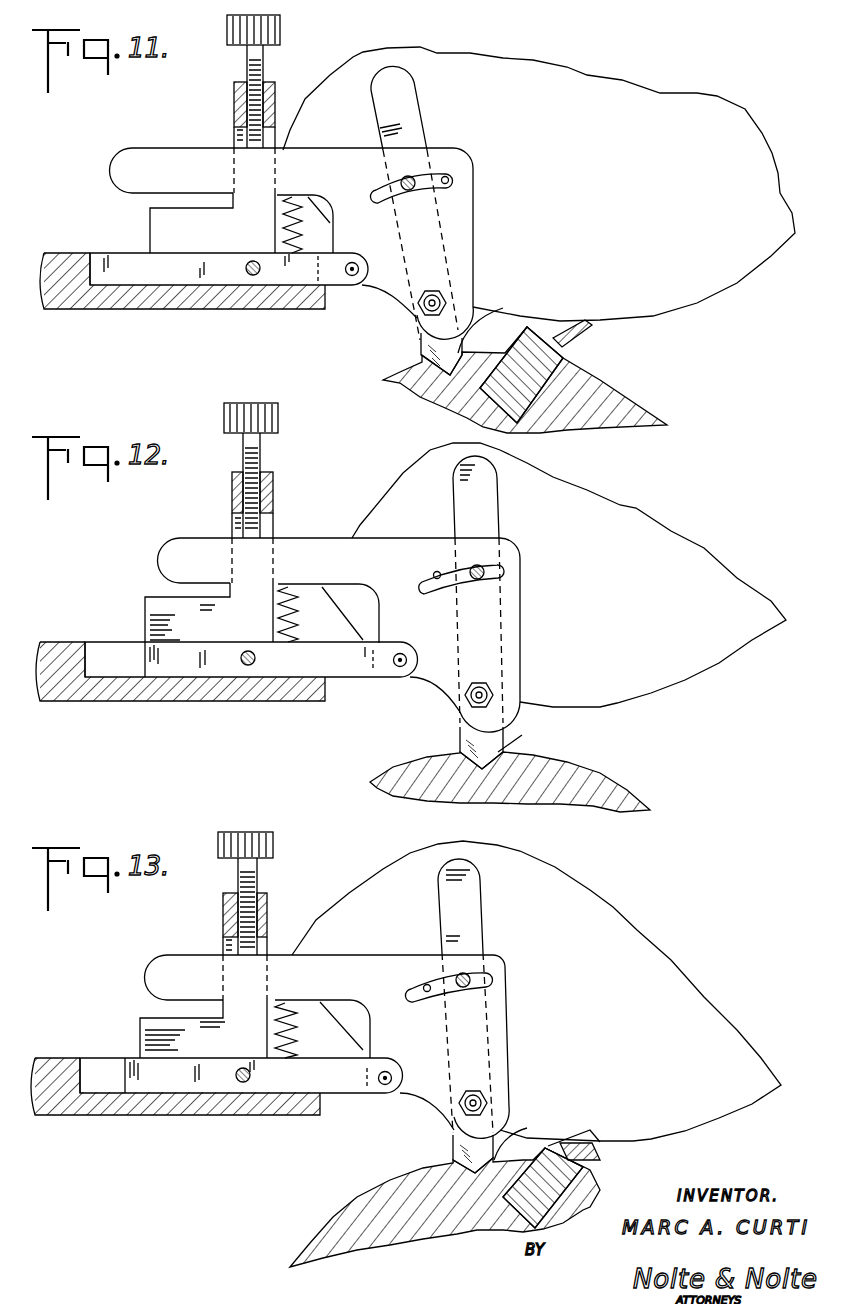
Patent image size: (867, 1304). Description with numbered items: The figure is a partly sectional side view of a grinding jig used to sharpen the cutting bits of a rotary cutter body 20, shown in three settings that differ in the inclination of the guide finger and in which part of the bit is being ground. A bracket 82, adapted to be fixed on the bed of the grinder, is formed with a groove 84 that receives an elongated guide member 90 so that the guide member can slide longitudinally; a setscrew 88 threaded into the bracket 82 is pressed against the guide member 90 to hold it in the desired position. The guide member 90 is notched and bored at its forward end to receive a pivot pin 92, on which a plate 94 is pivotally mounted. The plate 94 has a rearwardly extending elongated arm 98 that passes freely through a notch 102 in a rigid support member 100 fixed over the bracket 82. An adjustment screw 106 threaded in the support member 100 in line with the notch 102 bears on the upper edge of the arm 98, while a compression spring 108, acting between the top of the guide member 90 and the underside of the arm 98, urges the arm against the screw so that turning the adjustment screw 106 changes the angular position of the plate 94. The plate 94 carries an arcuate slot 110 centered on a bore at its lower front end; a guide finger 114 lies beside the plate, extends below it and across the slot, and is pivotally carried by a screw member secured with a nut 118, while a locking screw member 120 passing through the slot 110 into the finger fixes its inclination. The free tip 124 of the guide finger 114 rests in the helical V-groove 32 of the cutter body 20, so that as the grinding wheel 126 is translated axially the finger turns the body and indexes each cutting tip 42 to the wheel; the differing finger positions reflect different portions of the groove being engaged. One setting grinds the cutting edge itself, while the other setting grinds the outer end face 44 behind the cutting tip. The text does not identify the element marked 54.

In FIG. 11, the cutter body 20 is at (645, 414).
In FIG. 12, the cutter body 20 is at (640, 804).
In FIG. 13, the cutter body 20 is at (300, 1258).
In FIG. 11, the V-groove 32 is at (440, 372).
In FIG. 12, the V-groove 32 is at (468, 764).
In FIG. 13, the V-groove 32 is at (458, 1167).
In FIG. 11, the cutting tip 42 is at (582, 334).
In FIG. 13, the cutting tip 42 is at (606, 1154).
In FIG. 13, the outer end face 44 is at (580, 1138).
In FIG. 11, the insert block 54 is at (576, 353).
In FIG. 13, the insert block 54 is at (600, 1176).
In FIG. 11, the bracket 82 is at (60, 252).
In FIG. 12, the bracket 82 is at (58, 652).
In FIG. 13, the bracket 82 is at (55, 1068).
In FIG. 11, the groove 84 is at (112, 281).
In FIG. 12, the groove 84 is at (110, 673).
In FIG. 13, the groove 84 is at (98, 1090).
In FIG. 11, the setscrew 88 is at (253, 276).
In FIG. 12, the setscrew 88 is at (250, 666).
In FIG. 13, the setscrew 88 is at (244, 1083).
In FIG. 11, the guide member 90 is at (183, 275).
In FIG. 12, the guide member 90 is at (193, 666).
In FIG. 13, the guide member 90 is at (179, 1086).
In FIG. 11, the pivot pin 92 is at (352, 277).
In FIG. 12, the pivot pin 92 is at (402, 668).
In FIG. 13, the pivot pin 92 is at (386, 1086).
In FIG. 11, the plate 94 is at (373, 240).
In FIG. 12, the plate 94 is at (435, 620).
In FIG. 13, the plate 94 is at (421, 1038).
In FIG. 11, the elongated arm 98 is at (168, 160).
In FIG. 12, the elongated arm 98 is at (200, 552).
In FIG. 13, the elongated arm 98 is at (190, 972).
In FIG. 11, the support member 100 is at (234, 104).
In FIG. 12, the support member 100 is at (272, 490).
In FIG. 13, the support member 100 is at (268, 908).
In FIG. 11, the notch 102 is at (178, 222).
In FIG. 12, the notch 102 is at (178, 616).
In FIG. 13, the notch 102 is at (165, 1032).
In FIG. 11, the adjustment screw 106 is at (272, 45).
In FIG. 12, the adjustment screw 106 is at (246, 403).
In FIG. 13, the adjustment screw 106 is at (262, 815).
In FIG. 11, the compression spring 108 is at (294, 252).
In FIG. 12, the compression spring 108 is at (296, 642).
In FIG. 13, the compression spring 108 is at (293, 1060).
In FIG. 11, the arcuate slot 110 is at (449, 181).
In FIG. 12, the arcuate slot 110 is at (438, 572).
In FIG. 13, the arcuate slot 110 is at (420, 984).
In FIG. 11, the guide finger 114 is at (405, 128).
In FIG. 12, the guide finger 114 is at (488, 530).
In FIG. 13, the guide finger 114 is at (476, 932).
In FIG. 11, the nut 118 is at (446, 302).
In FIG. 12, the nut 118 is at (494, 696).
In FIG. 13, the nut 118 is at (489, 1104).
In FIG. 11, the locking screw member 120 is at (416, 183).
In FIG. 12, the locking screw member 120 is at (486, 572).
In FIG. 13, the locking screw member 120 is at (470, 987).
In FIG. 11, the tip 124 is at (503, 313).
In FIG. 12, the tip 124 is at (505, 755).
In FIG. 13, the tip 124 is at (526, 1133).
In FIG. 11, the grinding wheel 126 is at (612, 212).
In FIG. 12, the grinding wheel 126 is at (612, 616).
In FIG. 13, the grinding wheel 126 is at (536, 991).